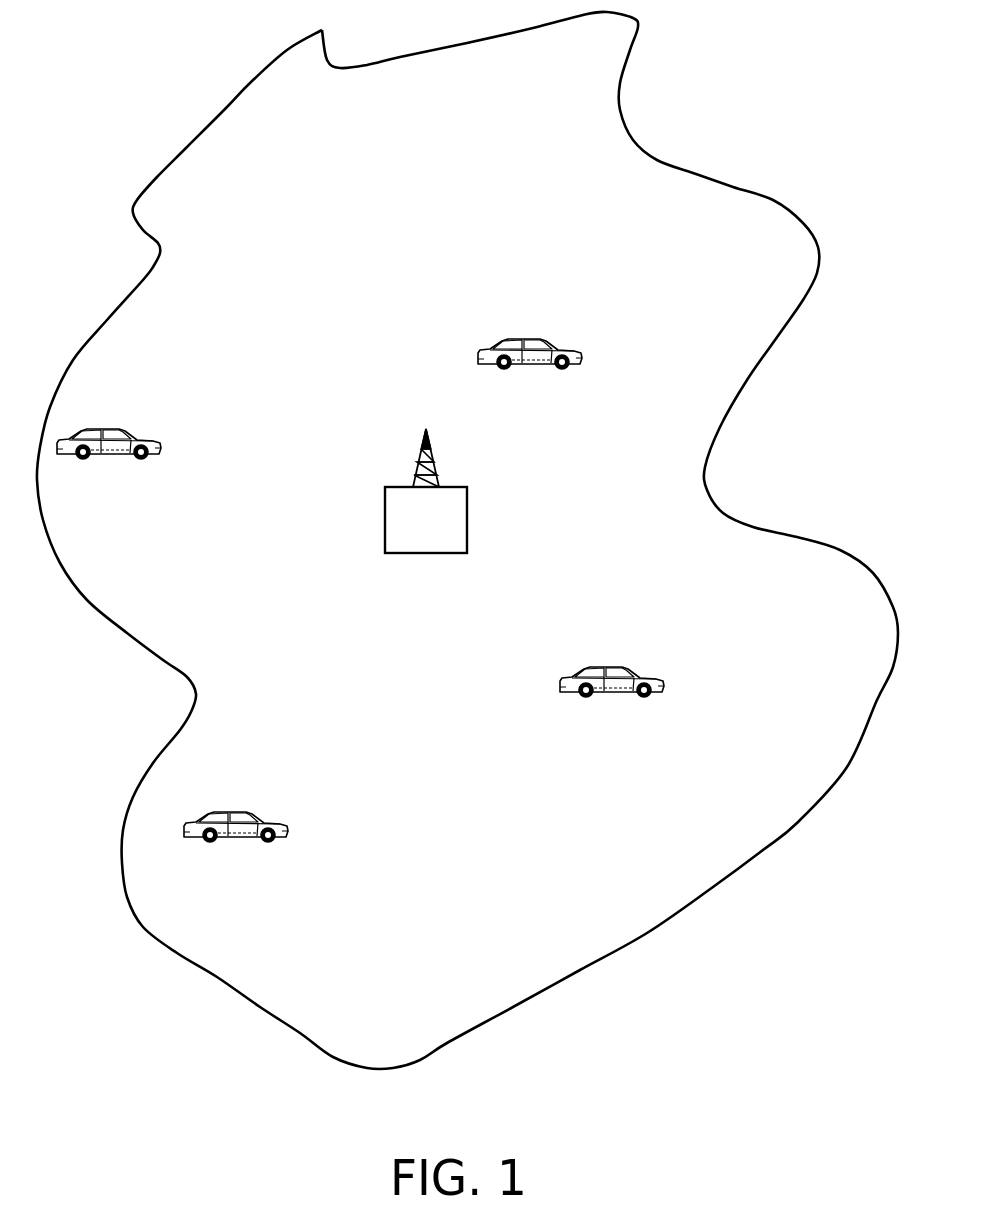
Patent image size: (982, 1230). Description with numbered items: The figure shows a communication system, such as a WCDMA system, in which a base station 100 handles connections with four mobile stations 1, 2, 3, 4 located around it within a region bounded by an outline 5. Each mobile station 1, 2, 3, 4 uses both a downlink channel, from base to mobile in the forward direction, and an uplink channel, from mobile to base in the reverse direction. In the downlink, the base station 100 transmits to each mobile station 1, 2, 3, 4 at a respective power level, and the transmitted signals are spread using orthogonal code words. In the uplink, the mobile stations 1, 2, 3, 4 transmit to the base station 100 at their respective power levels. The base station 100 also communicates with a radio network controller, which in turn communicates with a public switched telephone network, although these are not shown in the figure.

The mobile station 1 is at (628, 669).
The mobile station 2 is at (252, 814).
The mobile station 3 is at (547, 341).
The mobile station 4 is at (127, 433).
The cell coverage area boundary 5 is at (768, 848).
The base station 100 is at (467, 506).